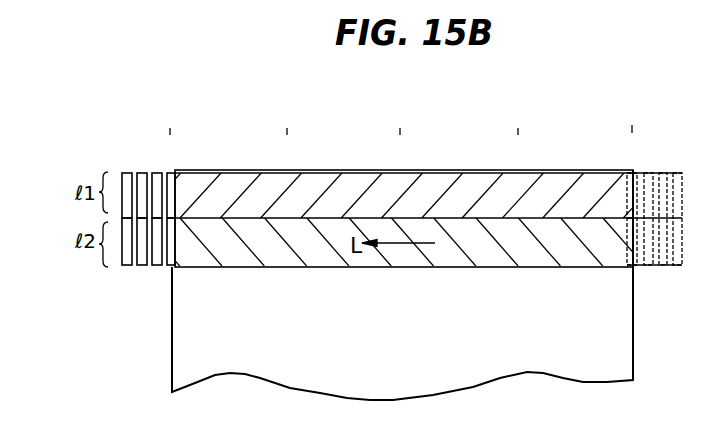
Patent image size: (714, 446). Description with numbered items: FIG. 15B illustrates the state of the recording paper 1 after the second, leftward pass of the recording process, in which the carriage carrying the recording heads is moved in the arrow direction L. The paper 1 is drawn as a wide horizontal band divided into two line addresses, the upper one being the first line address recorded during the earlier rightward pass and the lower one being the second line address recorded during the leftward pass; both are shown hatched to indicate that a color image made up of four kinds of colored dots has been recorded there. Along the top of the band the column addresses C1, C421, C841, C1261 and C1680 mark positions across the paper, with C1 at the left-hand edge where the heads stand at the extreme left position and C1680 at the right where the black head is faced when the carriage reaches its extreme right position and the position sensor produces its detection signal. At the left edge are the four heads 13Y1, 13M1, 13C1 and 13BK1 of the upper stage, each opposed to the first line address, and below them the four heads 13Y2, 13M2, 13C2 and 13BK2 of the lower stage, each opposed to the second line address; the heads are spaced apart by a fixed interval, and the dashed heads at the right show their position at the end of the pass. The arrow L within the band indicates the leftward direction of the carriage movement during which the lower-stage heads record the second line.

The recording paper 1 is at (388, 392).
The yellow sensor element, first row 13Y1 is at (168, 171).
The magenta sensor element, first row 13M1 is at (157, 173).
The cyan sensor element, first row 13C1 is at (143, 173).
The black sensor element, first row 13BK1 is at (128, 173).
The yellow sensor element, second row 13Y2 is at (127, 266).
The magenta sensor element, second row 13M2 is at (141, 266).
The cyan sensor element, second row 13C2 is at (157, 266).
The black sensor element, second row 13BK2 is at (169, 266).
The column address C1 is at (166, 120).
The column position 421 C421 is at (281, 120).
The column position 841 C841 is at (393, 120).
The column position 1261 C1261 is at (511, 120).
The column address C1680 is at (632, 118).